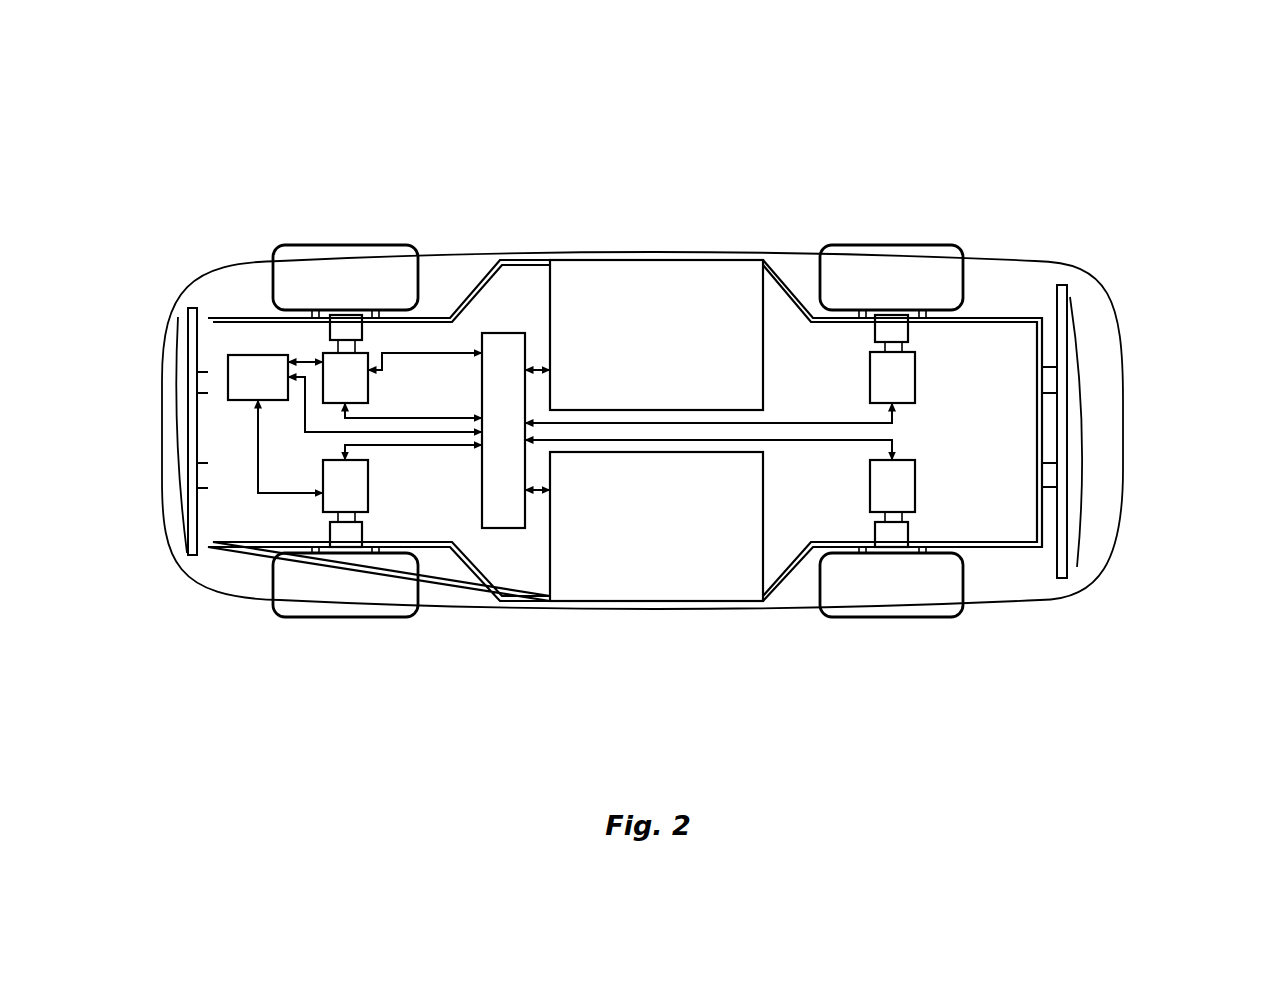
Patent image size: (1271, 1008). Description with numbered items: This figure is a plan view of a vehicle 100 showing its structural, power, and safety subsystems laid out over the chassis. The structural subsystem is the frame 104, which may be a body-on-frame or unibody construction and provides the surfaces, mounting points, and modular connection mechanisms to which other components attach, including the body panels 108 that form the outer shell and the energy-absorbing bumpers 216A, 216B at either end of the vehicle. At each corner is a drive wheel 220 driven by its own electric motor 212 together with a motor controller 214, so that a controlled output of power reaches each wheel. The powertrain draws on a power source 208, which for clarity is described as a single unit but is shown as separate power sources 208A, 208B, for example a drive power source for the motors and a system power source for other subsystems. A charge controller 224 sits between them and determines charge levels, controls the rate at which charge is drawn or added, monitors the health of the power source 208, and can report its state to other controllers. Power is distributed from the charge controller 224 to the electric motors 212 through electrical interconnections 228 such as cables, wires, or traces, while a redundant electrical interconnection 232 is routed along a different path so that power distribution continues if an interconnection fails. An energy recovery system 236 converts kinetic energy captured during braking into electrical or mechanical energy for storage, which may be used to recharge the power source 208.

The vehicle 100 is at (1062, 160).
The frame 104 is at (990, 545).
The body panels 108 is at (222, 587).
The power source 208 is at (678, 426).
The power source 208A is at (703, 290).
The power source 208B is at (617, 552).
The electric motor 212 is at (335, 355).
The motor controller 214 is at (348, 535).
The bumper 216A is at (178, 435).
The bumper 216B is at (1075, 425).
The drive wheel 220 is at (352, 250).
The charge controller 224 is at (503, 333).
The electrical interconnections 228 is at (378, 417).
The redundant electrical interconnection 232 is at (442, 352).
The energy recovery system 236 is at (250, 370).